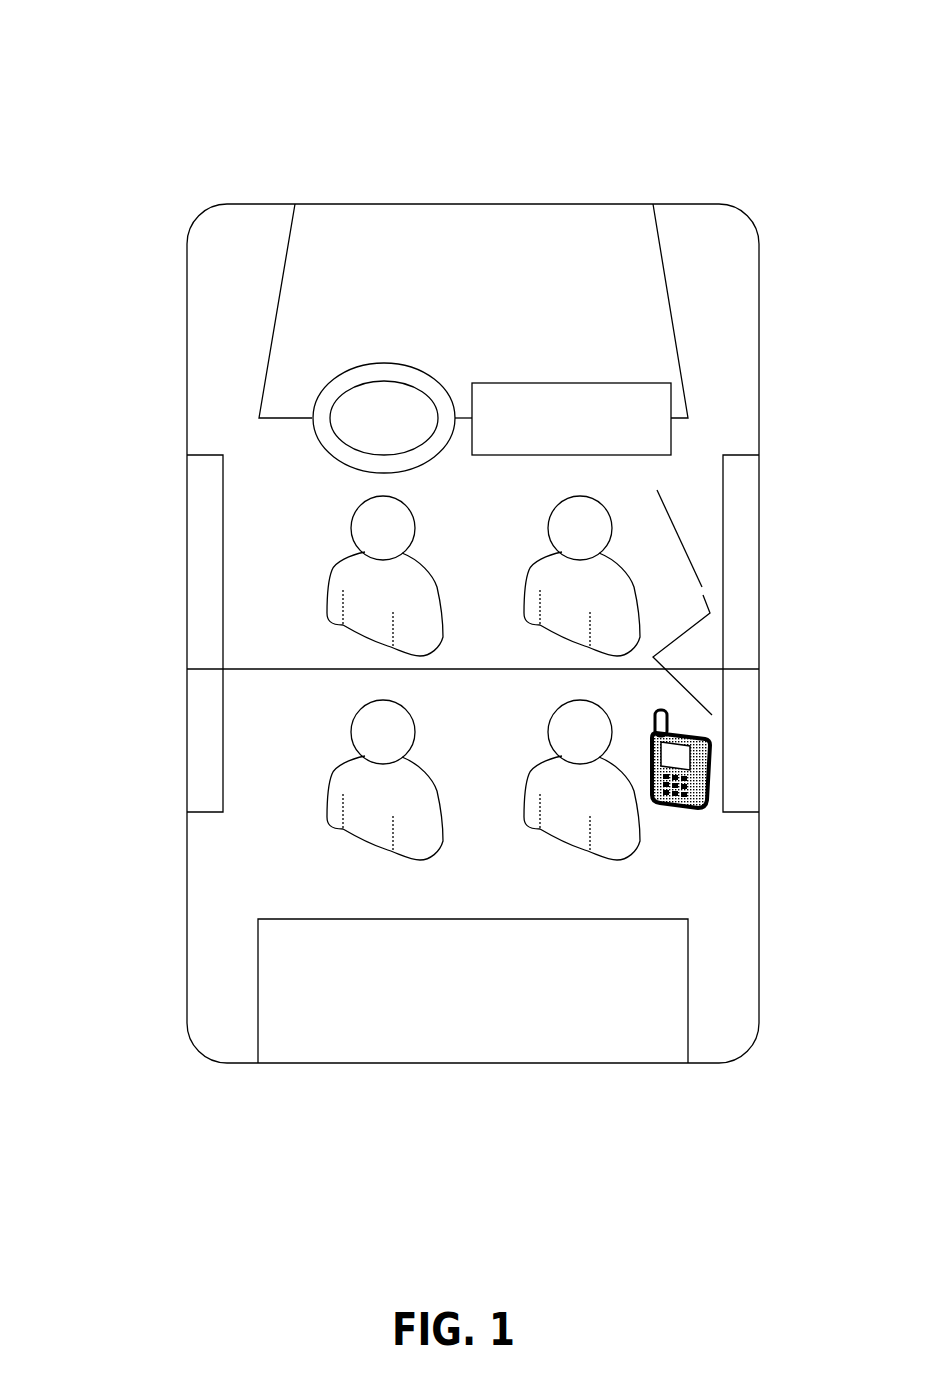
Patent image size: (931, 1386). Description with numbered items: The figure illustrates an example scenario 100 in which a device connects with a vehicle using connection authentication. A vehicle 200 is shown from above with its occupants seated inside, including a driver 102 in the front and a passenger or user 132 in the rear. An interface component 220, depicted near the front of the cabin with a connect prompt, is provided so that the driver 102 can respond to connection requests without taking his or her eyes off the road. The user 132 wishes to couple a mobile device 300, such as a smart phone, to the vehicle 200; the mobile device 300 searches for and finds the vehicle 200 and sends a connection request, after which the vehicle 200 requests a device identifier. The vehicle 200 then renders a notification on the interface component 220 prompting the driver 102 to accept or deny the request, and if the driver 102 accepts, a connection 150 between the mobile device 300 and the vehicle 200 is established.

The scenario 100 is at (150, 62).
The vehicle 200 is at (362, 204).
The interface component 220 is at (582, 383).
The driver 102 is at (340, 562).
The user 132 is at (540, 768).
The connection 150 is at (682, 602).
The mobile device 300 is at (687, 822).